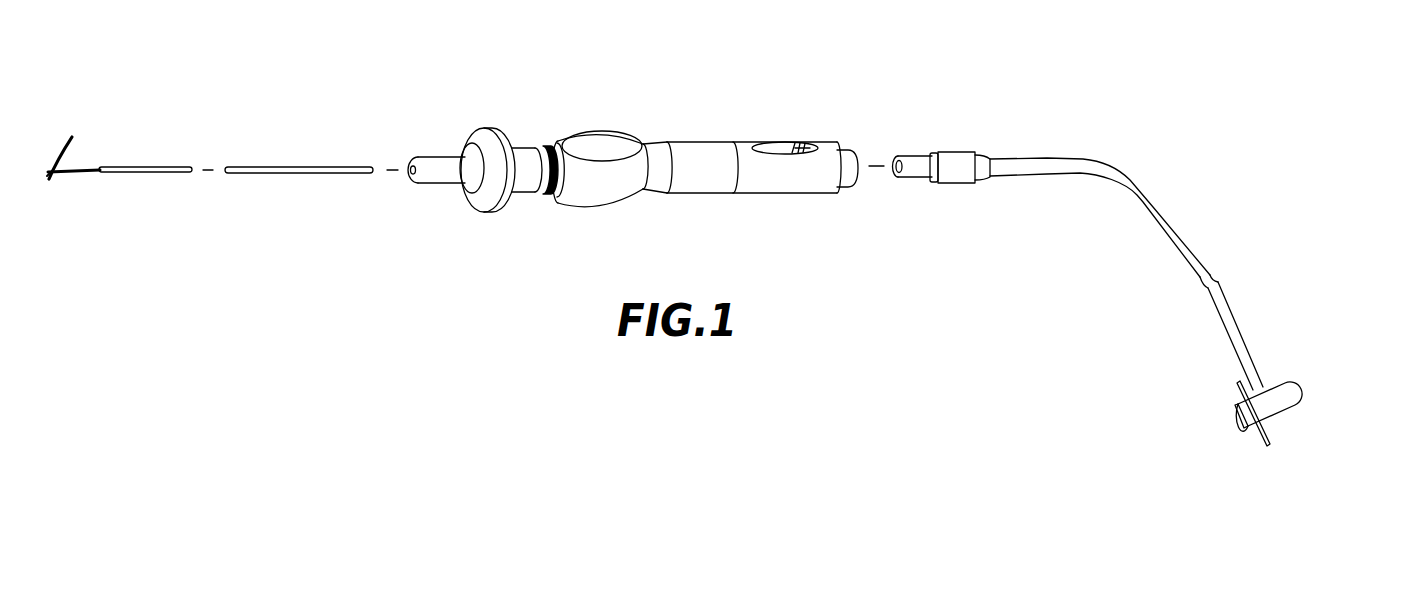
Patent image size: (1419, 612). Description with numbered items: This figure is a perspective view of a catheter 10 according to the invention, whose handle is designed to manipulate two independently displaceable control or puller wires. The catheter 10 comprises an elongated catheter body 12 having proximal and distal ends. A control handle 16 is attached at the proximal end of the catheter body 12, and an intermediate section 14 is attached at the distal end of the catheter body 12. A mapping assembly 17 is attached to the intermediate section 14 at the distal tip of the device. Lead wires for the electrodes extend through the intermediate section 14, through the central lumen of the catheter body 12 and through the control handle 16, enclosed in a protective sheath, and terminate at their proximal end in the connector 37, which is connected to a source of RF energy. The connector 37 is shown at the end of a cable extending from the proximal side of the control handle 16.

The catheter 10 is at (838, 110).
The catheter body 12 is at (263, 173).
The intermediate section 14 is at (155, 173).
The control handle 16 is at (692, 185).
The mapping assembly 17 is at (80, 173).
The connector 37 is at (1278, 420).